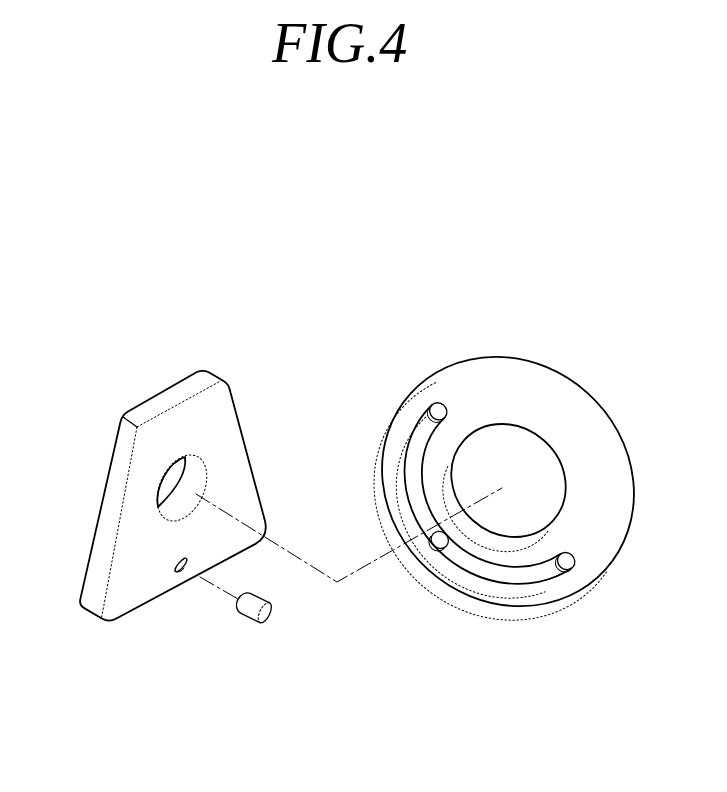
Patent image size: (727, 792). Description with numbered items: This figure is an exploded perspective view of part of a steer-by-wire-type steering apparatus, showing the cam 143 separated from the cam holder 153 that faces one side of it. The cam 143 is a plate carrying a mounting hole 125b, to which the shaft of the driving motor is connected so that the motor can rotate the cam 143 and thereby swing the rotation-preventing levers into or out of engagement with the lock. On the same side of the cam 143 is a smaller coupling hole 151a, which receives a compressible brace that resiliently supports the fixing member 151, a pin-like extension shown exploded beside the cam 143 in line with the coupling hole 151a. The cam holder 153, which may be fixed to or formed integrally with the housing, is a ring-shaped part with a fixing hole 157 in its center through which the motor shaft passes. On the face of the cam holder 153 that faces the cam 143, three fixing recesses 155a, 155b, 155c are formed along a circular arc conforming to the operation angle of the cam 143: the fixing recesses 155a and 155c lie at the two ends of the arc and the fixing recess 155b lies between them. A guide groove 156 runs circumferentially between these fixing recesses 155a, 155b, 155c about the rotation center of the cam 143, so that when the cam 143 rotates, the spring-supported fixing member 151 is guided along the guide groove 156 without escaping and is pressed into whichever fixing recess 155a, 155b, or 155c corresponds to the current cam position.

The cam 143 is at (133, 552).
The mounting hole 125b is at (197, 476).
The coupling hole 151a is at (185, 576).
The fixing member 151 is at (243, 621).
The cam holder 153 is at (523, 408).
The fixing hole 157 is at (450, 487).
The guide groove 156 is at (507, 577).
The fixing recess 155a is at (567, 573).
The fixing recess 155b is at (434, 549).
The fixing recess 155c is at (434, 417).